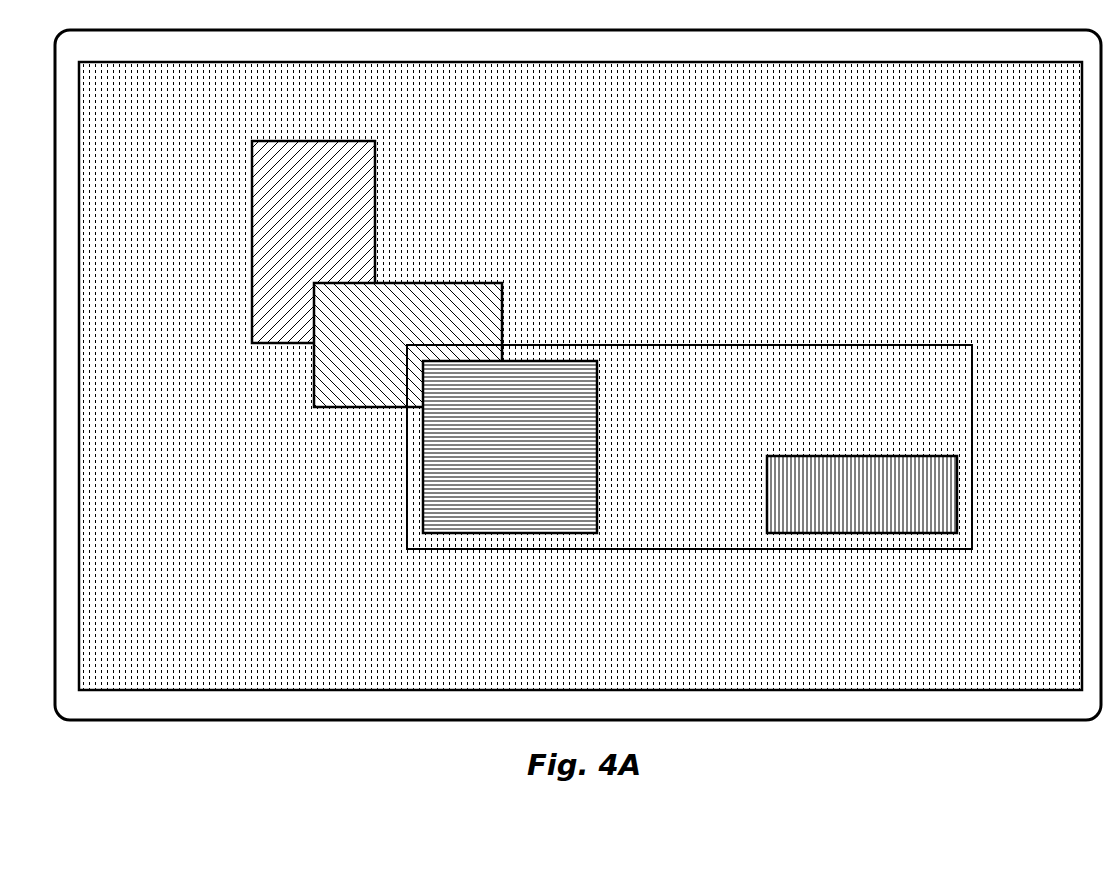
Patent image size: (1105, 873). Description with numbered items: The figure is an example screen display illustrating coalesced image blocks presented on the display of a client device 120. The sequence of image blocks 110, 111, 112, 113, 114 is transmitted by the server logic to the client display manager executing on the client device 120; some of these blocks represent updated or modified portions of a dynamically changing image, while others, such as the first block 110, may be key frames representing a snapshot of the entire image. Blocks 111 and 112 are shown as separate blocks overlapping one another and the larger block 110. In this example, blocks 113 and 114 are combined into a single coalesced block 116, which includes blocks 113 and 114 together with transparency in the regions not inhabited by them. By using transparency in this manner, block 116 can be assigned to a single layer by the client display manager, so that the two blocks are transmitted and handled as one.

The client device 120 is at (1098, 56).
The image block 110 is at (1075, 91).
The image block 111 is at (372, 168).
The image block 112 is at (496, 310).
The image block 113 is at (590, 388).
The image block 114 is at (950, 485).
The coalesced image block 116 is at (968, 375).